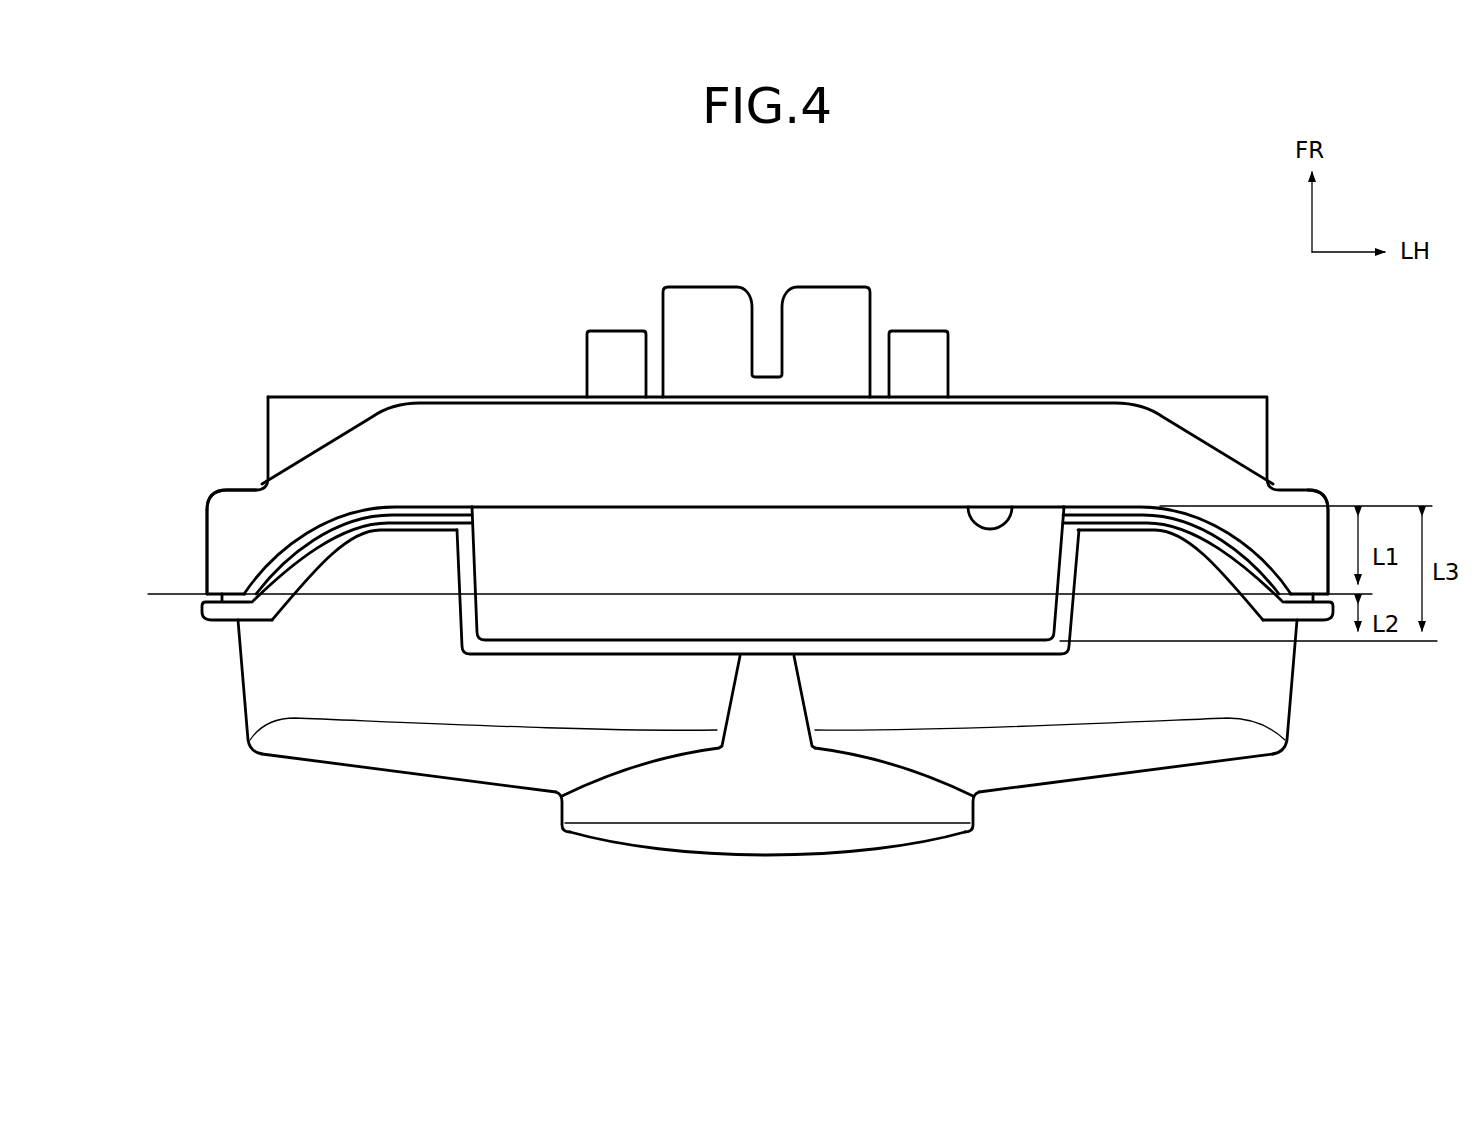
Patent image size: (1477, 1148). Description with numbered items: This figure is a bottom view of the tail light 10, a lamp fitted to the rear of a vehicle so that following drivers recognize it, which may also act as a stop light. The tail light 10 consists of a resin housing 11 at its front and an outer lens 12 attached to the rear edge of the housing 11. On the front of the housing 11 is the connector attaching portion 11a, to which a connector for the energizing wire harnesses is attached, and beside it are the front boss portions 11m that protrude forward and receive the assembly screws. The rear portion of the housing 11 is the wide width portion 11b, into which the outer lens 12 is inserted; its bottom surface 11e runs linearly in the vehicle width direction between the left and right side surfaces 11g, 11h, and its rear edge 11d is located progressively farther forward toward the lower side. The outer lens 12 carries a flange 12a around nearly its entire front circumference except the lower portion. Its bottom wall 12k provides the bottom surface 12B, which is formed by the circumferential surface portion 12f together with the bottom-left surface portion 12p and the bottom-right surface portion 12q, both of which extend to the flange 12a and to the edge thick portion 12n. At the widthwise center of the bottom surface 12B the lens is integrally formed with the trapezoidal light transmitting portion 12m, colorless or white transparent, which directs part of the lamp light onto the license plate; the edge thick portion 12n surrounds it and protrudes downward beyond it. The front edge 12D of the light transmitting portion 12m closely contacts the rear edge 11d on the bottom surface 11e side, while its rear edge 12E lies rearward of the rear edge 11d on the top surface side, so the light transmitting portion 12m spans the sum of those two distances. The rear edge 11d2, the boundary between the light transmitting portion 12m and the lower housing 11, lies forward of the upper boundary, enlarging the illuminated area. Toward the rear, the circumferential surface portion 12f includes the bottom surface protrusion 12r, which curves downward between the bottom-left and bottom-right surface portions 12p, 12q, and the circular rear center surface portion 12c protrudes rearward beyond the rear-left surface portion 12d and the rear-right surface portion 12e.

The tail light 10 is at (258, 802).
The housing 11 is at (321, 393).
The connector attaching portion 11a is at (706, 305).
The front boss portions 11m is at (606, 347).
The bottom surface 11e is at (518, 433).
The right side surface 11h is at (204, 513).
The wide width portion 11b is at (203, 540).
The left side surface 11g is at (1333, 517).
The rear edge 11d is at (204, 609).
The rear edge 11d2 is at (1012, 503).
The outer lens 12 is at (348, 774).
The flange 12a is at (228, 615).
The front edge 12D is at (554, 505).
The light transmitting portion 12m is at (815, 535).
The bottom surface 12B is at (508, 692).
The bottom-right surface portion 12q is at (340, 672).
The bottom-left surface portion 12p is at (1140, 680).
The rear-right surface portion 12e is at (397, 778).
The rear-left surface portion 12d is at (1170, 773).
The circumferential surface portion 12f is at (550, 812).
The rear center surface portion 12c is at (770, 855).
The bottom surface protrusion 12r is at (745, 690).
The rear edge 12E is at (844, 642).
The bottom wall 12k is at (927, 675).
The edge thick portion 12n is at (998, 647).